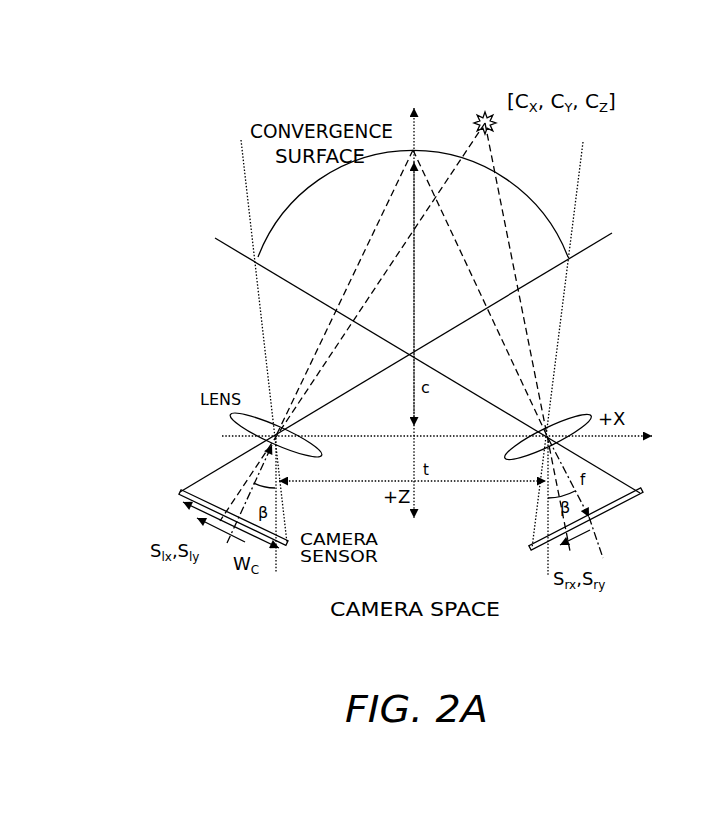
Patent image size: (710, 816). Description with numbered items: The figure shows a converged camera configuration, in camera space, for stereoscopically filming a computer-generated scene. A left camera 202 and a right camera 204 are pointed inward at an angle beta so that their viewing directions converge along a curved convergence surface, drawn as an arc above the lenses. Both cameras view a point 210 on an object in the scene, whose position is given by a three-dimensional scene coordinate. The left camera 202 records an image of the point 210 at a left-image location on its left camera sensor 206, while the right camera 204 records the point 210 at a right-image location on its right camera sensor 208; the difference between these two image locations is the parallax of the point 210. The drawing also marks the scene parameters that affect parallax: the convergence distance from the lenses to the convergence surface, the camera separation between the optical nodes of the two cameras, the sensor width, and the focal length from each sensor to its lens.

The left camera 202 is at (213, 566).
The right camera 204 is at (614, 554).
The left camera sensor 206 is at (181, 491).
The right camera sensor 208 is at (643, 491).
The point 210 is at (478, 114).